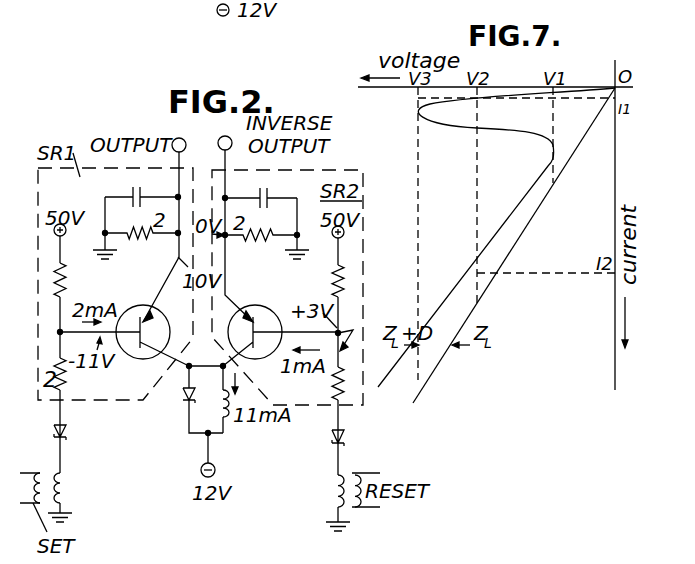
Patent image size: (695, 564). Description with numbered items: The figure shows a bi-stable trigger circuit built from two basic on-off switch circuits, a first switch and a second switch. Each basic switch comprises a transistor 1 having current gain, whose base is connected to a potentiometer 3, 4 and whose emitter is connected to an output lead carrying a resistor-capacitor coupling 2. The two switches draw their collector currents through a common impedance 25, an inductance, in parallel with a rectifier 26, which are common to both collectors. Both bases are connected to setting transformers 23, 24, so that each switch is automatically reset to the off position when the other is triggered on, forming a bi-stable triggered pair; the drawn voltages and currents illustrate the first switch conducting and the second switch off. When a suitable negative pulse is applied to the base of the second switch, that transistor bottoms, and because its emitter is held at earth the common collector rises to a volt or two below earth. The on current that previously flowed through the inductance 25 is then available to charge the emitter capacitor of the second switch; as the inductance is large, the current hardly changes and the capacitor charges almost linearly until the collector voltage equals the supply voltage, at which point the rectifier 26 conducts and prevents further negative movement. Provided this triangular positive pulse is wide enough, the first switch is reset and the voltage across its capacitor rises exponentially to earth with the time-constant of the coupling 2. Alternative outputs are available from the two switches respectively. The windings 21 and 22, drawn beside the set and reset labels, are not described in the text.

The transistor 1 is at (280, 322).
The resistor-capacitor coupling 2 is at (151, 301).
The potentiometer 3 is at (192, 280).
The potentiometer 4 is at (330, 383).
The set winding inductor 21 is at (57, 489).
The reset winding inductor 22 is at (346, 490).
The setting transformer 23 is at (74, 429).
The setting transformer 24 is at (352, 435).
The impedance 25 is at (240, 419).
The rectifier 26 is at (163, 372).